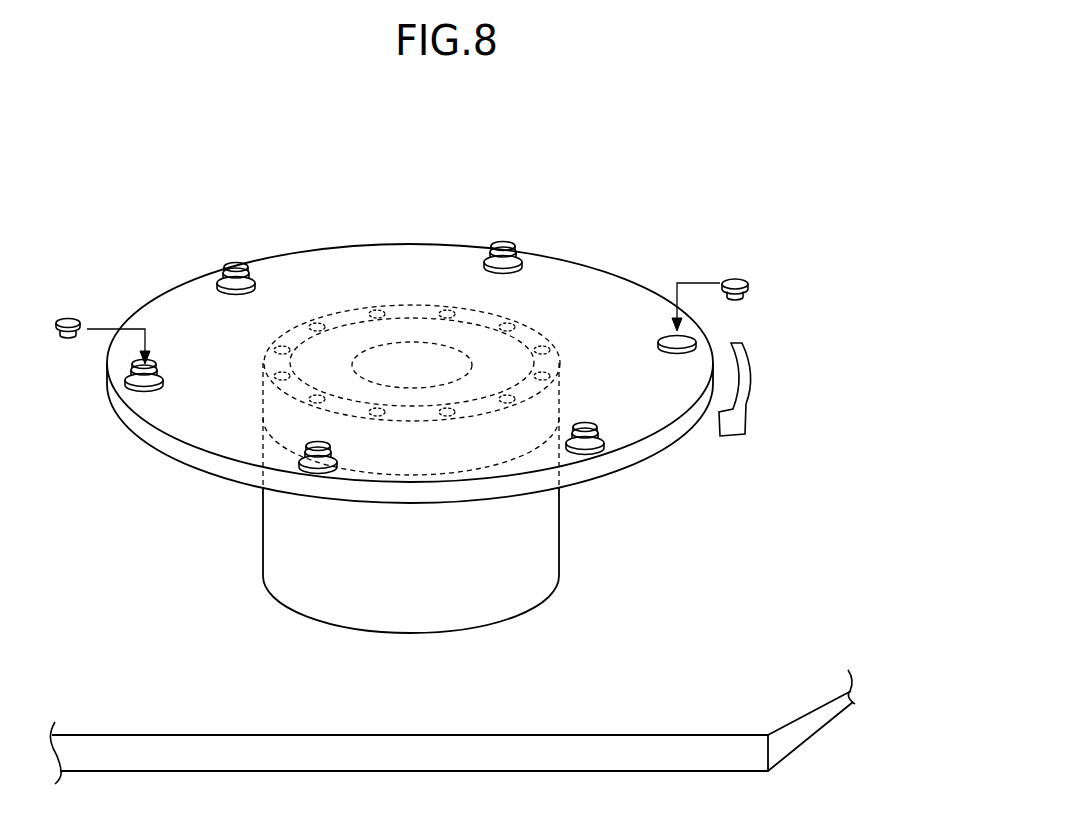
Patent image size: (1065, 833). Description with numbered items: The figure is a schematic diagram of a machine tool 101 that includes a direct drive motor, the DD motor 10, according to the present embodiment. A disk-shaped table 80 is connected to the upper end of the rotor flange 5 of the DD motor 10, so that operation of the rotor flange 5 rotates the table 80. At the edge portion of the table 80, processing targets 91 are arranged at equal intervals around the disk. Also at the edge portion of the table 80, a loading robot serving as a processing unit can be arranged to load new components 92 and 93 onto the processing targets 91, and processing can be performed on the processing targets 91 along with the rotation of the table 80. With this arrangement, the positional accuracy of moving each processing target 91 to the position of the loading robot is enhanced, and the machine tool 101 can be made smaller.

The rotor flange 5 is at (425, 304).
The DD motor 10 is at (548, 566).
The table 80 is at (177, 308).
The processing targets 91 is at (254, 283).
The component 92 is at (253, 274).
The component 93 is at (230, 264).
The machine tool 101 is at (734, 193).